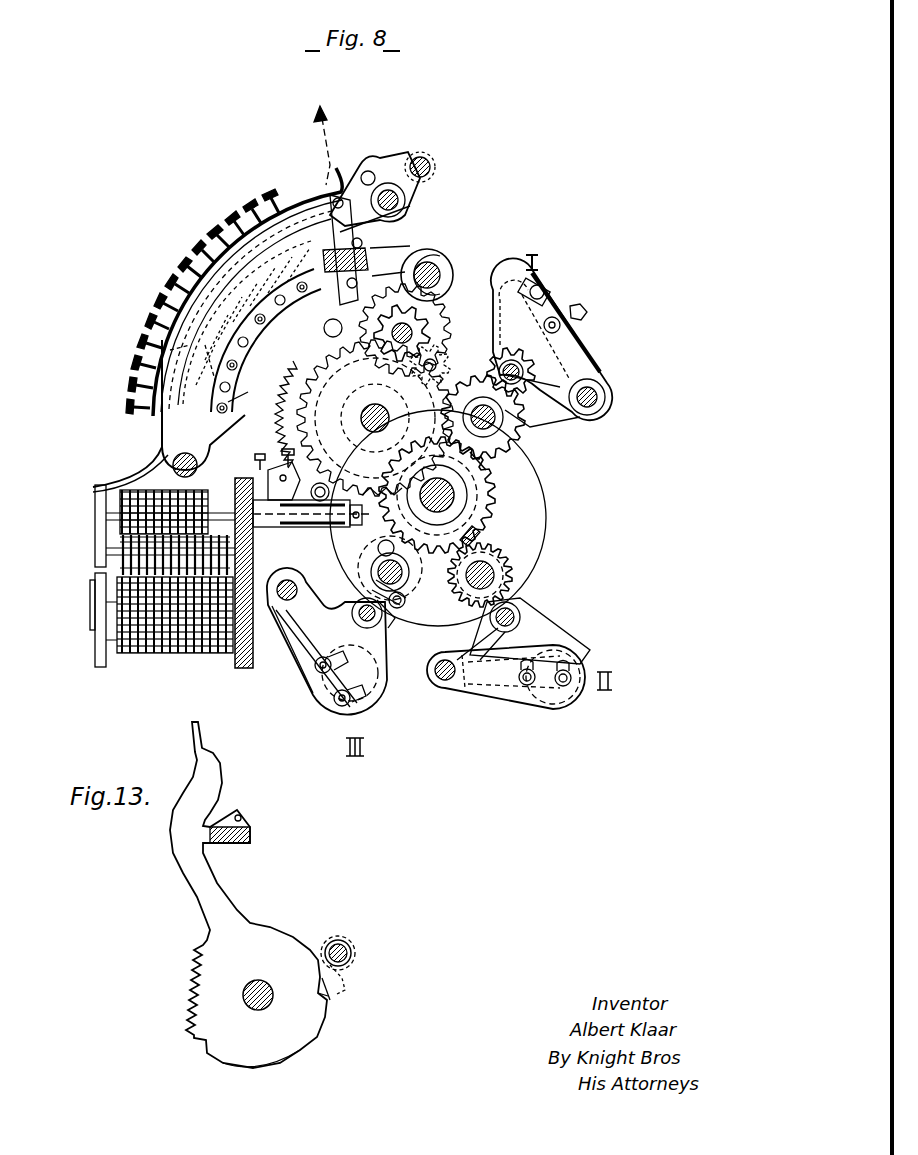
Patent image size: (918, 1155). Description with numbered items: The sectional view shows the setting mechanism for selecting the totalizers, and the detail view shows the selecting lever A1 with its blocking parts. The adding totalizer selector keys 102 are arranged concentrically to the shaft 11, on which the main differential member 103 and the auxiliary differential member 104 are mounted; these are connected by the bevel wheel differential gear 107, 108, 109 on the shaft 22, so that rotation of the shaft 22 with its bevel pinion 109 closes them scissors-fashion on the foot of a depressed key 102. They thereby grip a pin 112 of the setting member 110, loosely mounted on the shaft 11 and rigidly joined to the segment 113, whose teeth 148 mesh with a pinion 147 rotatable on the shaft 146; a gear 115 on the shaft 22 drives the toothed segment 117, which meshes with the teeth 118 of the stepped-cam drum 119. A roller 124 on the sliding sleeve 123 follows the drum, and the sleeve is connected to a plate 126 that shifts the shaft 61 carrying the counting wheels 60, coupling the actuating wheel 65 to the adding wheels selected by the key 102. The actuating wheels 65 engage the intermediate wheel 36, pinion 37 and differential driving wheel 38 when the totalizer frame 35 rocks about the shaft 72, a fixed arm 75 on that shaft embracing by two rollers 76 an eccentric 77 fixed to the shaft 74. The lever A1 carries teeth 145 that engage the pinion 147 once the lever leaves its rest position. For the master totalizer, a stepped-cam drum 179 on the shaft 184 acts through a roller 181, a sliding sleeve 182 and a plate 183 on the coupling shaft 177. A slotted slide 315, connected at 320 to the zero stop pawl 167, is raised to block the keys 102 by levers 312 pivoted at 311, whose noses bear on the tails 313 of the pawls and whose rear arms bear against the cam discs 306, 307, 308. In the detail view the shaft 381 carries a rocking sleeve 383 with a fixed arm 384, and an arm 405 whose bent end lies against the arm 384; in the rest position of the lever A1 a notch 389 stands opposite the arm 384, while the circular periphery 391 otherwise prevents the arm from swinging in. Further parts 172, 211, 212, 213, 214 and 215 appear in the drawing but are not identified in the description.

In FIG. 8, the adding totalizer selector keys 102 is at (160, 295).
In FIG. 8, the connection 320 is at (336, 246).
In FIG. 8, the zero stop pawl 167 is at (375, 241).
In FIG. 8, the levers 312 is at (366, 262).
In FIG. 8, the cam disc 306 is at (442, 258).
In FIG. 8, the cam disc 307 is at (452, 265).
In FIG. 8, the cam disc 308 is at (453, 283).
In FIG. 8, the pivot 311 is at (430, 300).
In FIG. 8, the pinion 147 is at (425, 320).
In FIG. 8, the shaft 146 is at (430, 335).
In FIG. 8, the intermediate wheel 36 is at (498, 362).
In FIG. 8, the rollers 76 is at (478, 383).
In FIG. 8, the teeth 145 is at (435, 365).
In FIG. 8, the shaft 74 is at (429, 373).
In FIG. 8, the tails 313 is at (338, 332).
In FIG. 8, the main differential member 103 is at (300, 372).
In FIG. 8, the pin 112 is at (333, 342).
In FIG. 8, the setting member 110 is at (368, 372).
In FIG. 8, the teeth 148 is at (372, 408).
In FIG. 8, the segment 113 is at (375, 418).
In FIG. 8, the shaft 11 is at (390, 419).
In FIG. 13, the shaft 11 is at (248, 1003).
In FIG. 8, the slotted slide 315 is at (238, 404).
In FIG. 8, the segment body 172 is at (180, 418).
In FIG. 8, the auxiliary differential member 104 is at (257, 450).
In FIG. 8, the gear 115 is at (415, 483).
In FIG. 8, the shaft 22 is at (434, 490).
In FIG. 8, the eccentric 77 is at (508, 397).
In FIG. 8, the pinion 37 is at (516, 424).
In FIG. 8, the differential driving wheel 38 is at (484, 462).
In FIG. 8, the bevel pinion 109 is at (480, 478).
In FIG. 8, the bevel wheel 107 is at (437, 495).
In FIG. 8, the toothed segment 117 is at (486, 527).
In FIG. 8, the stepped-cam drum 119 is at (514, 566).
In FIG. 8, the teeth 118 is at (515, 574).
In FIG. 8, the roller 124 is at (513, 602).
In FIG. 8, the pin 212 is at (380, 553).
In FIG. 8, the shaft 184 is at (390, 570).
In FIG. 8, the bevel wheel 108 is at (412, 572).
In FIG. 8, the stepped-cam drum 179 is at (408, 590).
In FIG. 8, the pin 211 is at (405, 607).
In FIG. 8, the pivot 214 is at (280, 612).
In FIG. 8, the lever 213 is at (330, 598).
In FIG. 8, the sliding sleeve 182 is at (367, 628).
In FIG. 8, the roller 181 is at (388, 617).
In FIG. 8, the link 215 is at (303, 650).
In FIG. 8, the plate 183 is at (382, 683).
In FIG. 8, the coupling shaft 177 is at (318, 670).
In FIG. 8, the shaft 72 is at (446, 680).
In FIG. 8, the shaft 61 is at (527, 680).
In FIG. 8, the sliding sleeve 123 is at (508, 658).
In FIG. 8, the plate 126 is at (587, 652).
In FIG. 8, the fixed arm 75 is at (560, 414).
In FIG. 8, the totalizer frame 35 is at (582, 355).
In FIG. 8, the actuating wheel 65 is at (583, 313).
In FIG. 8, the counting wheels 60 is at (582, 310).
In FIG. 13, the adding totalizer selector lever A1 is at (190, 890).
In FIG. 13, the rocking sleeve 383 is at (329, 938).
In FIG. 13, the shaft 381 is at (352, 951).
In FIG. 13, the arm 405 is at (352, 985).
In FIG. 13, the fixed arm 384 is at (340, 998).
In FIG. 13, the notch 389 is at (327, 1010).
In FIG. 13, the circular periphery 391 is at (300, 1050).